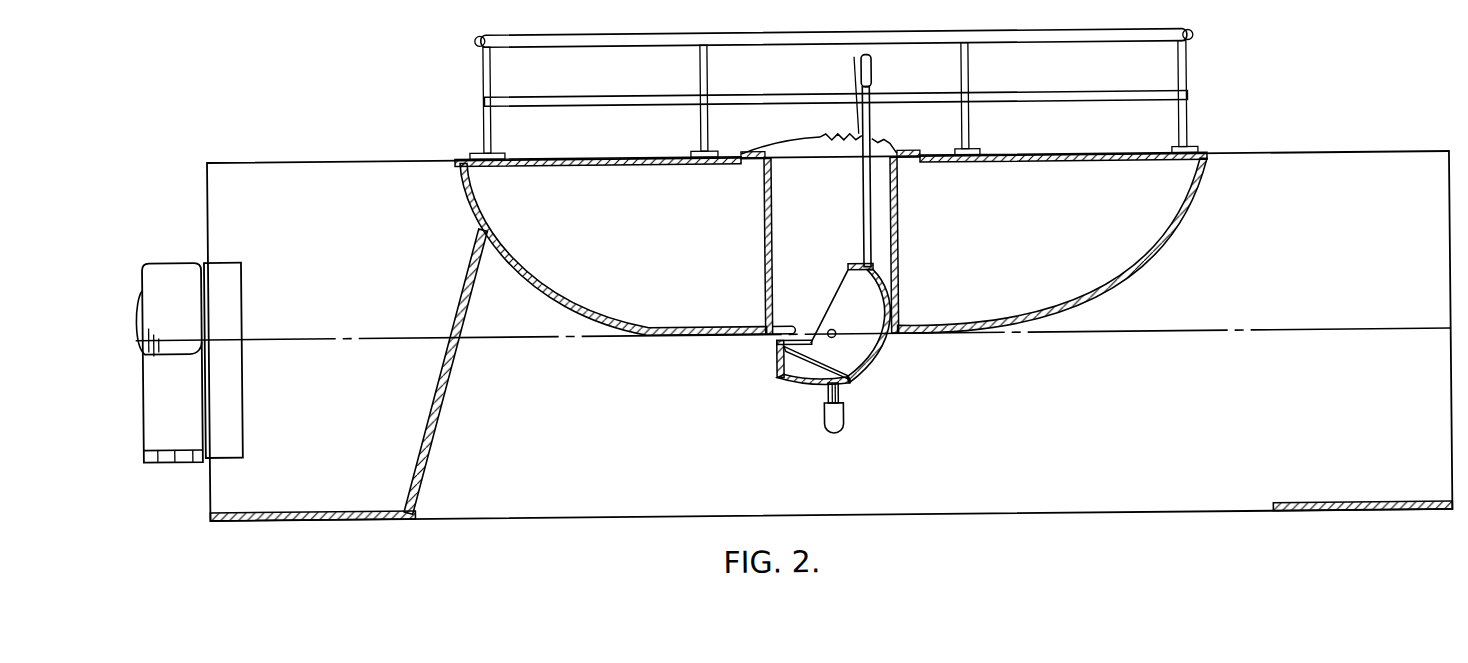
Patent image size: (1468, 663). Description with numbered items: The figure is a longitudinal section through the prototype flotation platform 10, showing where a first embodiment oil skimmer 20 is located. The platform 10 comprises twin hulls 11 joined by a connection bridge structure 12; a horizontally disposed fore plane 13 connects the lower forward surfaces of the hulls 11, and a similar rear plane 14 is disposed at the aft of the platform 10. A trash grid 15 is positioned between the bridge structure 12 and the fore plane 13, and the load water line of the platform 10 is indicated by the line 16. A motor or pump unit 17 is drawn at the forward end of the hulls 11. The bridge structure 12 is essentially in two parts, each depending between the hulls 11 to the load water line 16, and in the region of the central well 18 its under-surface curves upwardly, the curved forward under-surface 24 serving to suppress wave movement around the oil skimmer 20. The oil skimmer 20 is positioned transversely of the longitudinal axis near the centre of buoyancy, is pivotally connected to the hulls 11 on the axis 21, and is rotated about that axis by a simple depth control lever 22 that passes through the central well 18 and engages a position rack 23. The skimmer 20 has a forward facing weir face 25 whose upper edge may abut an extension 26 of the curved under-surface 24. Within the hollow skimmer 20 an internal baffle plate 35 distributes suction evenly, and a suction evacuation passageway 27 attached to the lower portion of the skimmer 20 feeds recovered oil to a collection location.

The flotation platform 10 is at (462, 152).
The hulls 11 is at (262, 160).
The connection bridge structure 12 is at (600, 162).
The fore plane 13 is at (322, 514).
The rear plane 14 is at (1334, 513).
The trash grid 15 is at (469, 282).
The load water line 16 is at (386, 340).
The motor 17 is at (171, 263).
The central well 18 is at (807, 199).
The oil skimmer 20 is at (866, 381).
The axis 21 is at (836, 341).
The depth control lever 22 is at (869, 86).
The position rack 23 is at (842, 141).
The curved forward under-surface 24 is at (556, 310).
The weir face 25 is at (773, 364).
The extension 26 is at (785, 349).
The suction evacuation passageway 27 is at (818, 429).
The internal baffle plate 35 is at (808, 361).